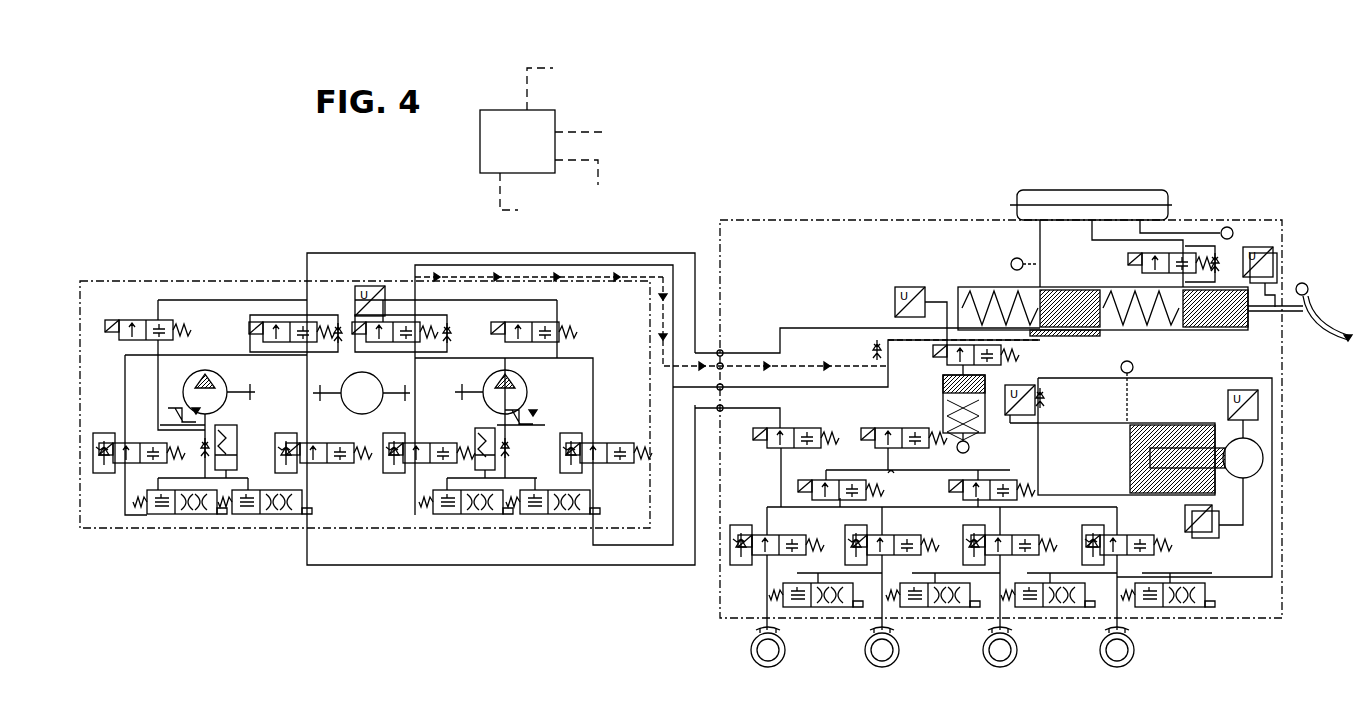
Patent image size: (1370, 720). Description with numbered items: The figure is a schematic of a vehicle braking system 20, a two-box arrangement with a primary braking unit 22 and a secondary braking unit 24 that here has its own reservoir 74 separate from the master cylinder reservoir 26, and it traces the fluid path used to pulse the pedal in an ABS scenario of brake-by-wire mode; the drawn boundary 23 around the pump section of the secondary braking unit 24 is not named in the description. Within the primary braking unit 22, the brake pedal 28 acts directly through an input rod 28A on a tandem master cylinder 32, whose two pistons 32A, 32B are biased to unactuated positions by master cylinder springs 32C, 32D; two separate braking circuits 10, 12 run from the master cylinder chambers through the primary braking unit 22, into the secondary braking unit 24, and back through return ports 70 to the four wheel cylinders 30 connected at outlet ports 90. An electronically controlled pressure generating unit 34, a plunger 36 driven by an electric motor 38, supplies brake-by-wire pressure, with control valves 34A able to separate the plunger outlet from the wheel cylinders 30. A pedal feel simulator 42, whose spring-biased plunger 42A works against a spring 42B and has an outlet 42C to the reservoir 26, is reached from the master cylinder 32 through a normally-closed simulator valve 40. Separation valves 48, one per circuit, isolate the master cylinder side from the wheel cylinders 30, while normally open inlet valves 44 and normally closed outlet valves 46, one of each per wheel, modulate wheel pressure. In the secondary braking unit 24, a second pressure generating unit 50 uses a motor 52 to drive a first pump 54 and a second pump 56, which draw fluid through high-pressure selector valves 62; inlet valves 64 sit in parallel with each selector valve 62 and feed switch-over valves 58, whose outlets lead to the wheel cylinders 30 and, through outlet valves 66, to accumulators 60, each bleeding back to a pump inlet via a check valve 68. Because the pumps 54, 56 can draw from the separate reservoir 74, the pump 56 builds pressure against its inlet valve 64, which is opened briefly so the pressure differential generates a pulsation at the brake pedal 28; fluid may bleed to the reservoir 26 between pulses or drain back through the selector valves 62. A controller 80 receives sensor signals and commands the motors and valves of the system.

The first braking circuit 10 is at (1042, 340).
The second braking circuit 12 is at (802, 326).
The vehicle braking system 20 is at (732, 84).
The primary braking unit 22 is at (770, 210).
The pressure supply unit 23 is at (593, 254).
The secondary braking unit 24 is at (132, 260).
The fluid reservoir 26 is at (1097, 188).
The brake pedal 28 is at (1340, 334).
The input rod 28A is at (1275, 318).
The wheel cylinders 30 is at (748, 635).
The master cylinder 32 is at (940, 225).
The master cylinder piston 32A is at (1224, 328).
The master cylinder piston 32B is at (1062, 286).
The master cylinder spring 32C is at (1158, 328).
The master cylinder spring 32D is at (974, 286).
The electronically controlled pressure generating unit 34 is at (1248, 526).
The control valves 34A is at (808, 486).
The plunger 36 is at (1139, 422).
The electric motor 38 is at (1225, 435).
The simulator valve 40 is at (932, 352).
The pedal feel simulator 42 is at (938, 404).
The spring-biased plunger 42A is at (942, 386).
The spring 42B is at (944, 418).
The outlet 42C is at (982, 447).
The inlet valves 44 is at (780, 538).
The outlet valves 46 is at (815, 607).
The separation valves 48 is at (798, 430).
The second electronically controlled pressure generating unit 50 is at (396, 364).
The motor 52 is at (348, 413).
The first pump 54 is at (223, 376).
The second pump 56 is at (523, 374).
The switch-over valves 58 is at (143, 444).
The accumulator 60 is at (235, 428).
The high-pressure selector valve 62 is at (140, 317).
The inlet valve 64 is at (258, 332).
The outlet valves 66 is at (175, 529).
The check valve 68 is at (200, 451).
The return ports 70 is at (717, 387).
The reservoir 74 is at (164, 420).
The controller 80 is at (542, 139).
The outlet ports 90 is at (750, 622).